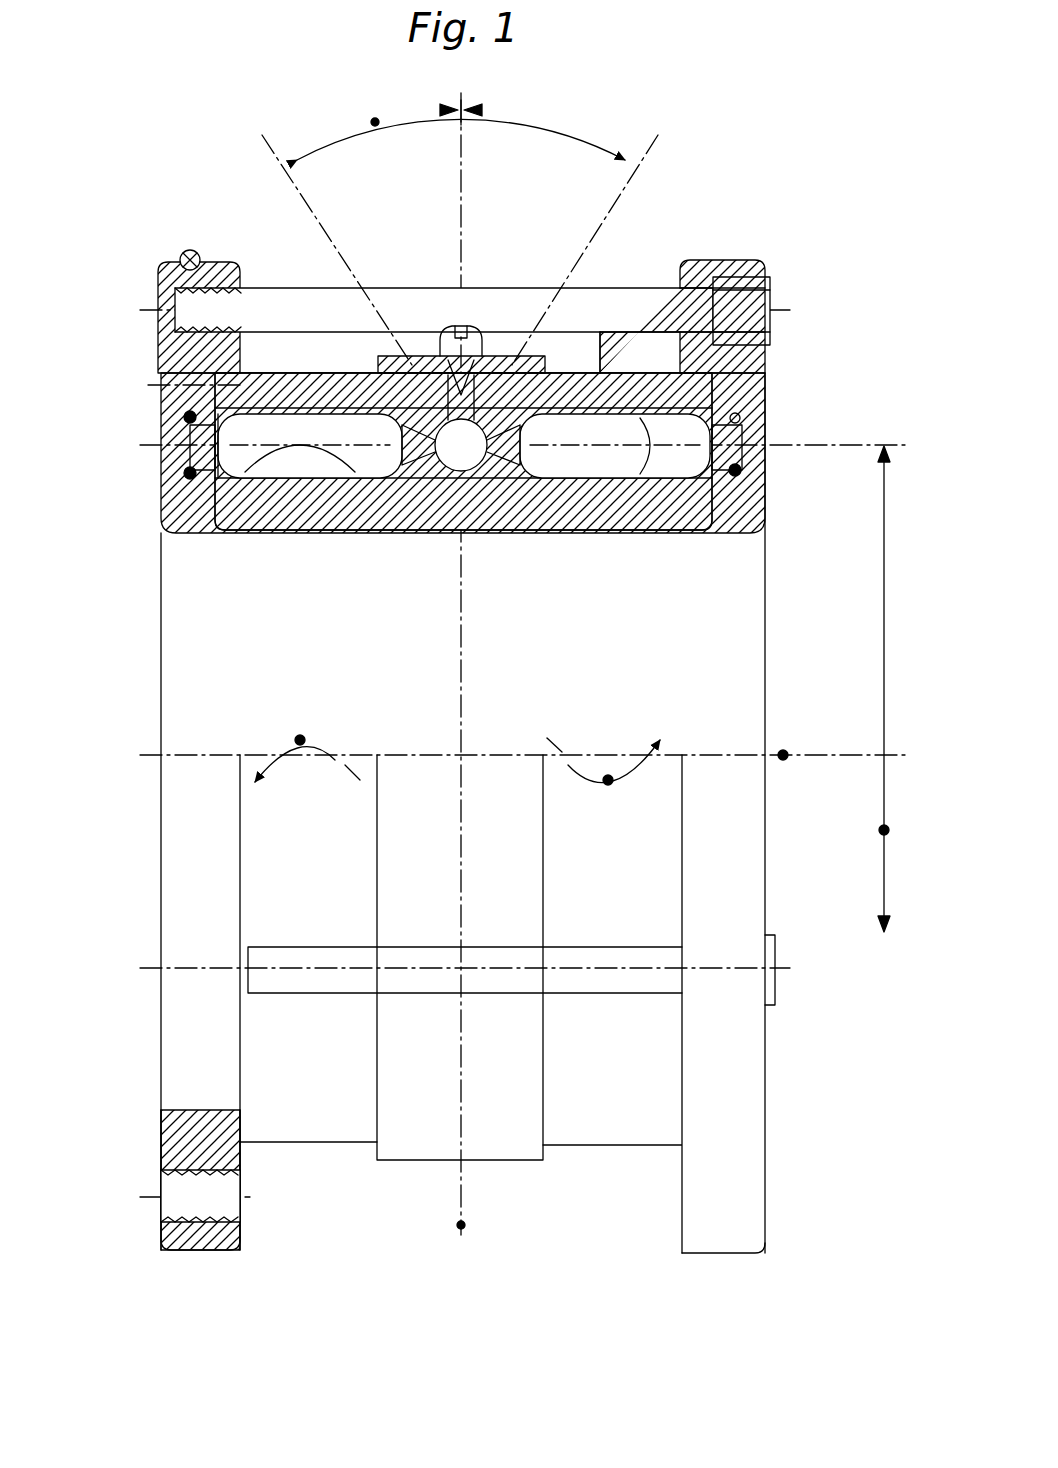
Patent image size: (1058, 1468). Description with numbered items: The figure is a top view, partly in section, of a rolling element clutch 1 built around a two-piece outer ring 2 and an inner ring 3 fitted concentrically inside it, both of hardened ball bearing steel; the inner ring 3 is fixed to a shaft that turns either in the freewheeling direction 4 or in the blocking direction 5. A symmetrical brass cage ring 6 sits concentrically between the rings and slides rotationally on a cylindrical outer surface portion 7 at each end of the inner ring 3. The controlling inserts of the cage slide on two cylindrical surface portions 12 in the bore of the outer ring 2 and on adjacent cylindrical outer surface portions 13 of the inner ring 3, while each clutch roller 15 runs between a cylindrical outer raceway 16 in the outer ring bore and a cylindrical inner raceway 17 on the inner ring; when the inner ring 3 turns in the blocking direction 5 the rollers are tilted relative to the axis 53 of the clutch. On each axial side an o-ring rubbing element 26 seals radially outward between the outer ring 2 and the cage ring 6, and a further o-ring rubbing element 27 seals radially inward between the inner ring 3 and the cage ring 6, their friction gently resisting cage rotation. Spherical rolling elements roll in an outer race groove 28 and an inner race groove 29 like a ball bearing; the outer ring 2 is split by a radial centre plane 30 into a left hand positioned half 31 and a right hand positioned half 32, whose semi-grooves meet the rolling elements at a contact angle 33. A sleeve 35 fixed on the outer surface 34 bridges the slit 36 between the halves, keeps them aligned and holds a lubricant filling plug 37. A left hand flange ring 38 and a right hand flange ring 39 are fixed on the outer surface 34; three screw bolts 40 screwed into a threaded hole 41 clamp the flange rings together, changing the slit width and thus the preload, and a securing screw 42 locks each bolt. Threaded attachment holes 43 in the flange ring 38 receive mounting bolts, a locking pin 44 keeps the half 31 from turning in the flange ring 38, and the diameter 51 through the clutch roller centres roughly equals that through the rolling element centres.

The rolling element clutch 1 is at (788, 252).
The outer ring 2 is at (655, 355).
The inner ring 3 is at (753, 493).
The freewheeling direction 4 is at (300, 740).
The blocking direction 5 is at (608, 780).
The cage ring 6 is at (185, 450).
The cylindrical outer surface portion 7 is at (745, 448).
The cylindrical surface portion 12 is at (375, 480).
The cylindrical outer surface portion 13 is at (580, 480).
The clutch roller 15 is at (647, 465).
The cylindrical outer raceway 16 is at (710, 520).
The cylindrical inner raceway 17 is at (230, 480).
The rubbing element 26 is at (185, 418).
The rubbing element 27 is at (175, 487).
The outer race groove 28 is at (432, 478).
The inner race groove 29 is at (492, 480).
The radial centre plane 30 is at (465, 1228).
The left hand positioned half 31 is at (322, 1130).
The right hand positioned half 32 is at (598, 1128).
The contact angle 33 is at (375, 122).
The outer surface 34 is at (568, 372).
The sleeve 35 is at (418, 1148).
The slit 36 is at (712, 396).
The lubricant filling plug 37 is at (476, 330).
The left hand flange ring 38 is at (178, 1252).
The right hand flange ring 39 is at (733, 1245).
The screw bolt 40 is at (275, 300).
The threaded hole 41 is at (165, 325).
The securing screw 42 is at (188, 250).
The threaded attachment hole 43 is at (165, 1190).
The locking pin 44 is at (165, 378).
The diameter 51 is at (884, 830).
The axis 53 is at (783, 755).